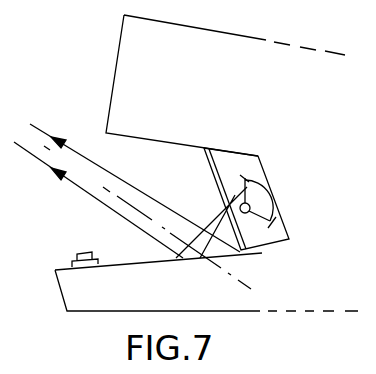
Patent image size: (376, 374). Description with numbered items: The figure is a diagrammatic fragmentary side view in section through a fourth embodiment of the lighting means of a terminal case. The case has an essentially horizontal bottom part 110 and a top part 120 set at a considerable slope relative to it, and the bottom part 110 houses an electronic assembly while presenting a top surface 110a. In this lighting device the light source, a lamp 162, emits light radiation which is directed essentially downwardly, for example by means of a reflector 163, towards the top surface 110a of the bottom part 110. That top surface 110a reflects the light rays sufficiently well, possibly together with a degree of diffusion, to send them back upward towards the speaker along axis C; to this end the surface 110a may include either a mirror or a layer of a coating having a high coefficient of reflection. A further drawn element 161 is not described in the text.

The bottom part 110 is at (172, 302).
The top surface 110a is at (116, 258).
The top part 120 is at (197, 73).
The mirror holder 161 is at (247, 157).
The lamp 162 is at (250, 204).
The reflector 163 is at (270, 221).
The axis C is at (9, 126).